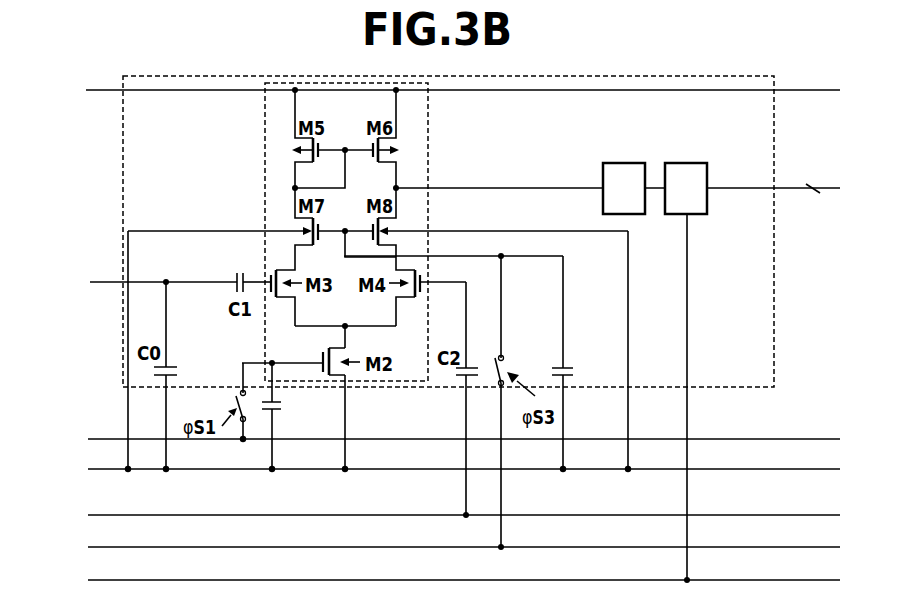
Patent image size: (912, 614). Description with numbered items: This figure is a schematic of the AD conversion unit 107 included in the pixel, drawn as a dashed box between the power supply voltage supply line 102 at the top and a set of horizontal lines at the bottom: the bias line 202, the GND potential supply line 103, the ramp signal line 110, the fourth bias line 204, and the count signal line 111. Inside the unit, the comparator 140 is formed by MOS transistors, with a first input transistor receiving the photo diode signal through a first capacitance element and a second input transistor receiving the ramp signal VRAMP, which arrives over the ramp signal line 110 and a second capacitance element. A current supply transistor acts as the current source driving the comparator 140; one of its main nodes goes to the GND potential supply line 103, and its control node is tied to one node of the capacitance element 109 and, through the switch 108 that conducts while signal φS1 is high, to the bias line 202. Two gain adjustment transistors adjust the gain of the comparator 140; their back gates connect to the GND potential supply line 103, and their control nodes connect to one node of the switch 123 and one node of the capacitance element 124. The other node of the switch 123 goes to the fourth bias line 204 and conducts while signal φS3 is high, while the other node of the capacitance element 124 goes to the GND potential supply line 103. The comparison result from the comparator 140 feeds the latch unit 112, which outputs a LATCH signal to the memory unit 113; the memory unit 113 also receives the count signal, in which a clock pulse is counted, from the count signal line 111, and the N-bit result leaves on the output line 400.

The power supply voltage supply line 102 is at (104, 89).
The AD conversion unit 107 is at (627, 76).
The comparator 140 is at (265, 138).
The latch unit 112 is at (624, 163).
The memory unit 113 is at (687, 163).
The output line 400 is at (818, 182).
The switch 108 is at (235, 405).
The capacitance element 109 is at (282, 409).
The switch 123 is at (505, 368).
The capacitance element 124 is at (575, 372).
The bias line 202 is at (107, 439).
The GND potential supply line 103 is at (107, 469).
The ramp signal line 110 is at (107, 515).
The fourth bias line 204 is at (107, 547).
The count signal line 111 is at (107, 580).